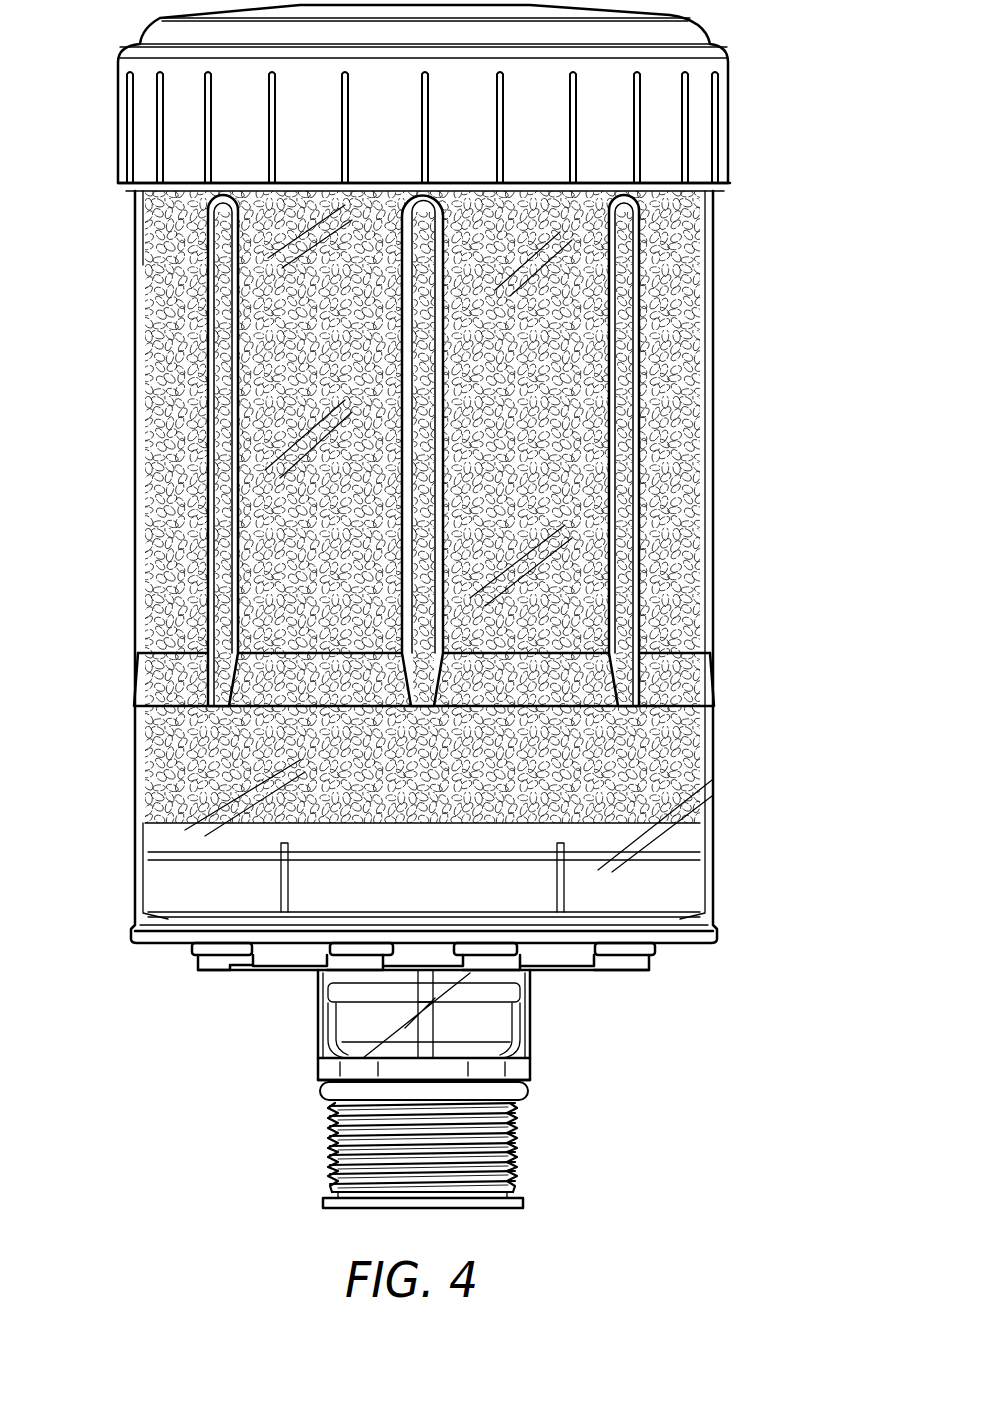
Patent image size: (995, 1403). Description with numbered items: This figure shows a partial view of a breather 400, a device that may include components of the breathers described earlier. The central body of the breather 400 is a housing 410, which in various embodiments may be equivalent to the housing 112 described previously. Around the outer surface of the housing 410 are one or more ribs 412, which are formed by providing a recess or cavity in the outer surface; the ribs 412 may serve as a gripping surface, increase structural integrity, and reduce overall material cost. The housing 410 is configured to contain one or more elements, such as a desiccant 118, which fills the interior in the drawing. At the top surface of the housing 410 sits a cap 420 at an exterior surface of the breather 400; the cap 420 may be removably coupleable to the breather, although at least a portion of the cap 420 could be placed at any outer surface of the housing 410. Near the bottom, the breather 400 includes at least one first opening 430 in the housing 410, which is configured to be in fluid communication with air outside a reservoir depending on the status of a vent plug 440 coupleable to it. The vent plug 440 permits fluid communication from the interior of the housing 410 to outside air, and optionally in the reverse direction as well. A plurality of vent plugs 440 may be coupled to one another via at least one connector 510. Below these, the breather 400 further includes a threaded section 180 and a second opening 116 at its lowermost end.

The breather 400 is at (112, 1128).
The cap 420 is at (732, 95).
The housing 112 is at (496, 567).
The housing 410 is at (712, 556).
The desiccant 118 is at (178, 770).
The ribs 412 is at (218, 420).
The vent plug 440 is at (200, 964).
The first opening 430 is at (430, 1005).
The connector 510 is at (272, 976).
The threaded section 180 is at (518, 1163).
The second opening 116 is at (356, 1206).